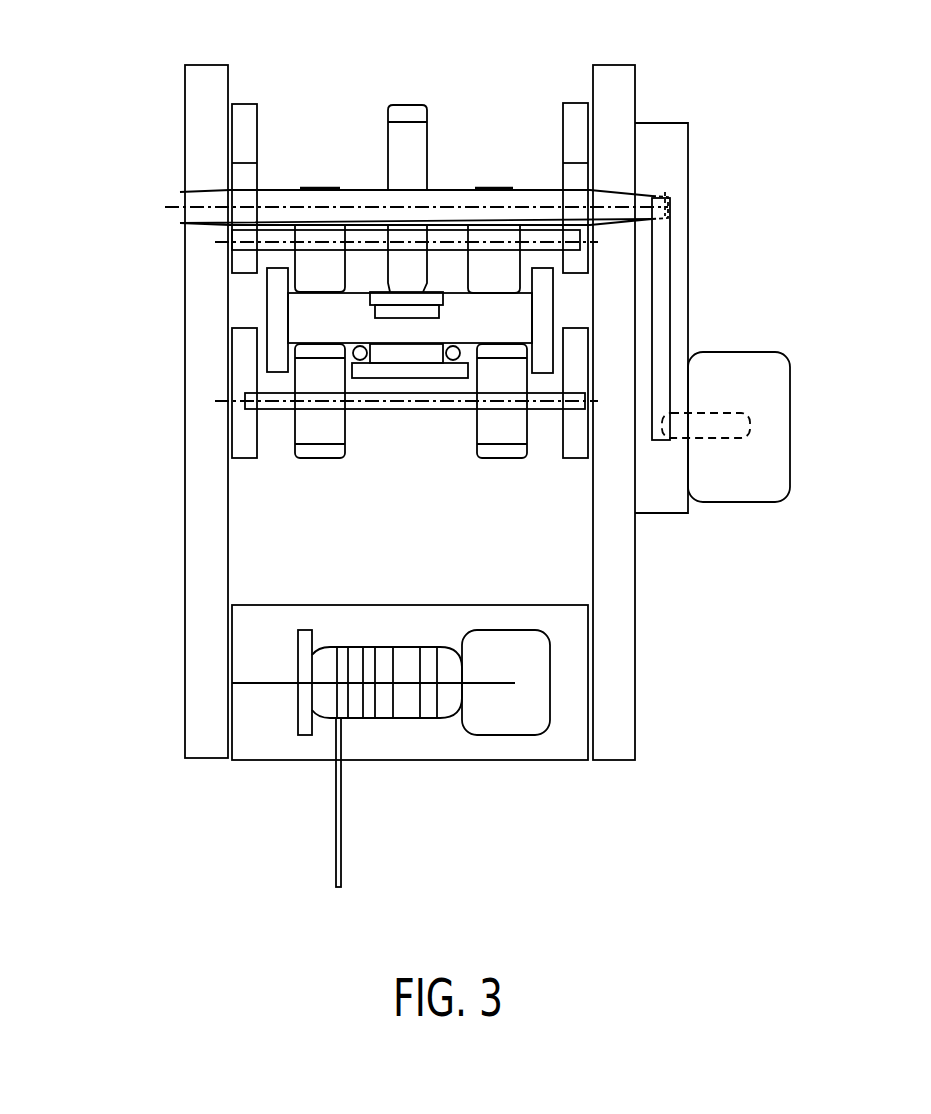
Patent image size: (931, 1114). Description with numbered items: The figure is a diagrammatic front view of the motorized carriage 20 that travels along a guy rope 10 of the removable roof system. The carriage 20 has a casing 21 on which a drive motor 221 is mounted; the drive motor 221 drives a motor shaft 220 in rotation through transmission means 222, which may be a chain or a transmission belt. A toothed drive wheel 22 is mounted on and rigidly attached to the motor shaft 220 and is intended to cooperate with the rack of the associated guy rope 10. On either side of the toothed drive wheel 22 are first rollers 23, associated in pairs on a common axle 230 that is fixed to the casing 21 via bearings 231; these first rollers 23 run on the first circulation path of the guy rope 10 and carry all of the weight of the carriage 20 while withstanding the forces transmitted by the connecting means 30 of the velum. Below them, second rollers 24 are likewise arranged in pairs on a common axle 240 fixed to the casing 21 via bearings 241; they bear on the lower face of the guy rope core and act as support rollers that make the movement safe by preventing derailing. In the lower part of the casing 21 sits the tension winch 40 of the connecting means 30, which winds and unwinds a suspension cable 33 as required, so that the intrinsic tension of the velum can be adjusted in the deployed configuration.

The guy rope 10 is at (262, 302).
The motorized carriage 20 is at (155, 633).
The casing 21 is at (198, 124).
The toothed drive wheel 22 is at (407, 105).
The motor shaft 220 is at (478, 198).
The drive motor 221 is at (763, 463).
The transmission means 222 is at (662, 333).
The first rollers 23 is at (497, 270).
The axle 230 is at (333, 242).
The bearings 231 is at (245, 104).
The second rollers 24 is at (495, 429).
The axle 240 is at (242, 405).
The bearings 241 is at (235, 358).
The connecting means 30 is at (391, 766).
The suspension cable 33 is at (388, 802).
The tension winch 40 is at (512, 722).